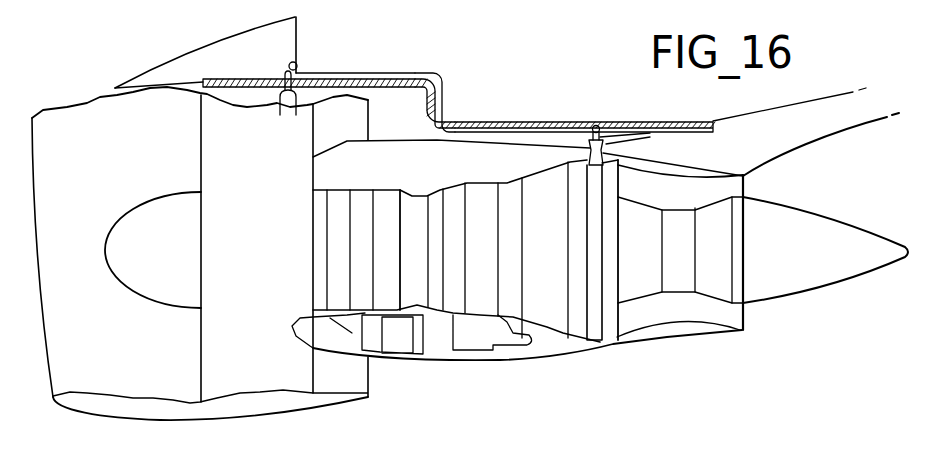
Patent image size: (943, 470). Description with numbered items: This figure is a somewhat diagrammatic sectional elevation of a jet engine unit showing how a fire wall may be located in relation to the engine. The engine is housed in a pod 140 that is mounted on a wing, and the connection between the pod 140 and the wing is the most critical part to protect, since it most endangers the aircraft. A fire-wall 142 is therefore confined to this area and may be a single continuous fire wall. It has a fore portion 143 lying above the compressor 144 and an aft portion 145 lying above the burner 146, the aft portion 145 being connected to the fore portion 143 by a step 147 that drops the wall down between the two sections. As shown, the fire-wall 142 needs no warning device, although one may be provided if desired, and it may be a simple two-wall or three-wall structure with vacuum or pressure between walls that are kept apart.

The pod 140 is at (358, 397).
The fire-wall 142 is at (515, 126).
The fore portion 143 is at (363, 79).
The compressor 144 is at (322, 192).
The aft portion 145 is at (693, 133).
The burner 146 is at (542, 180).
The step 147 is at (438, 108).